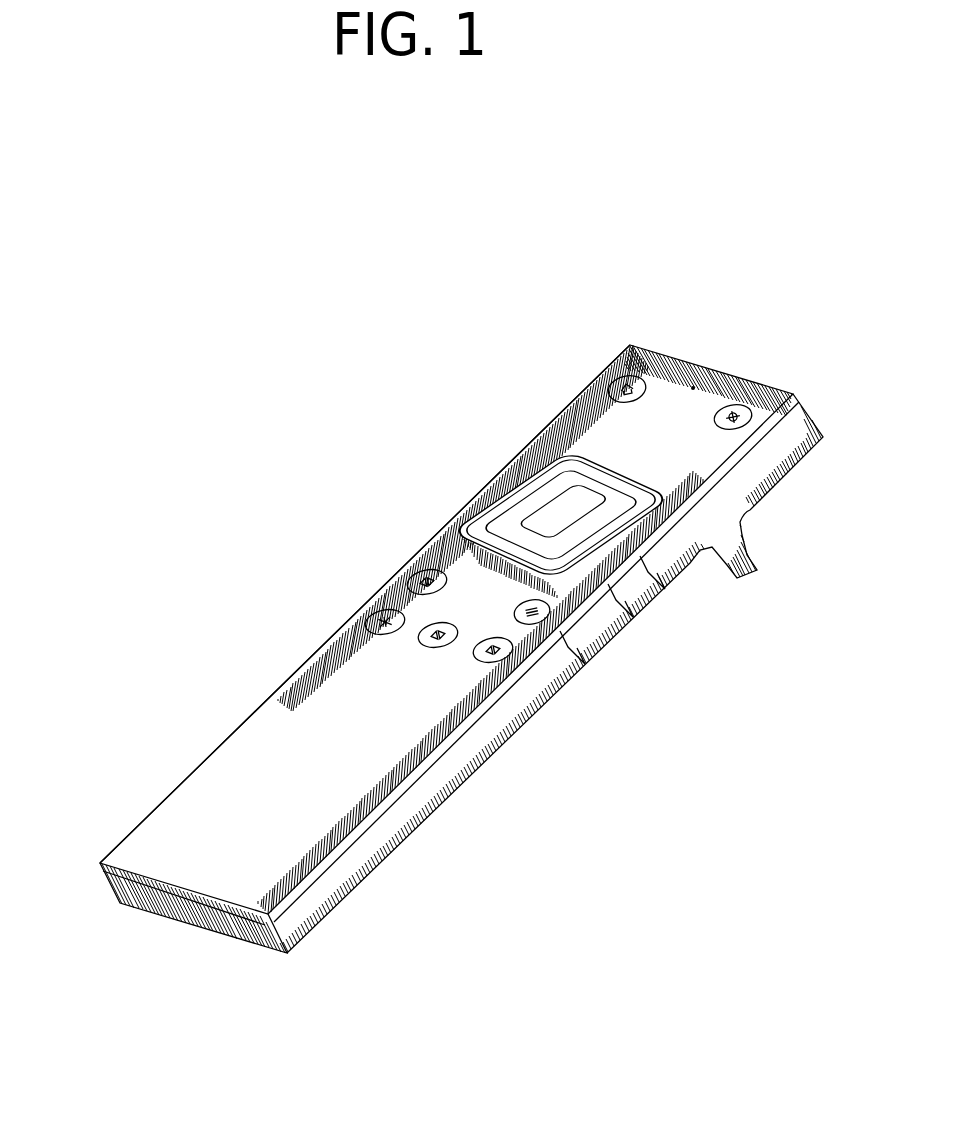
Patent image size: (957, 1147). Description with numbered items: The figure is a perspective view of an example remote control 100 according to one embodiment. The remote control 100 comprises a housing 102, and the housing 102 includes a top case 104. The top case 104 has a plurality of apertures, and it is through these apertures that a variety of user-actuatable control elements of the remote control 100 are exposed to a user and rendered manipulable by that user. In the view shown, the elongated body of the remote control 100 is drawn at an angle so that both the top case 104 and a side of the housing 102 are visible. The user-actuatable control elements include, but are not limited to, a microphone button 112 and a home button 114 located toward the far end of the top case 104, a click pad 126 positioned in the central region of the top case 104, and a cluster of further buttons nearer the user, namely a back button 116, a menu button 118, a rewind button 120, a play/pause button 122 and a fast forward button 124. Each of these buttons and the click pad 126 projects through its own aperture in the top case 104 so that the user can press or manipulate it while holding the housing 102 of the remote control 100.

The remote control 100 is at (298, 412).
The housing 102 is at (113, 878).
The top case 104 is at (297, 670).
The microphone button 112 is at (611, 382).
The home button 114 is at (753, 413).
The back button 116 is at (410, 574).
The menu button 118 is at (517, 610).
The rewind button 120 is at (373, 612).
The play/pause button 122 is at (425, 639).
The fast forward button 124 is at (498, 661).
The click pad 126 is at (497, 500).